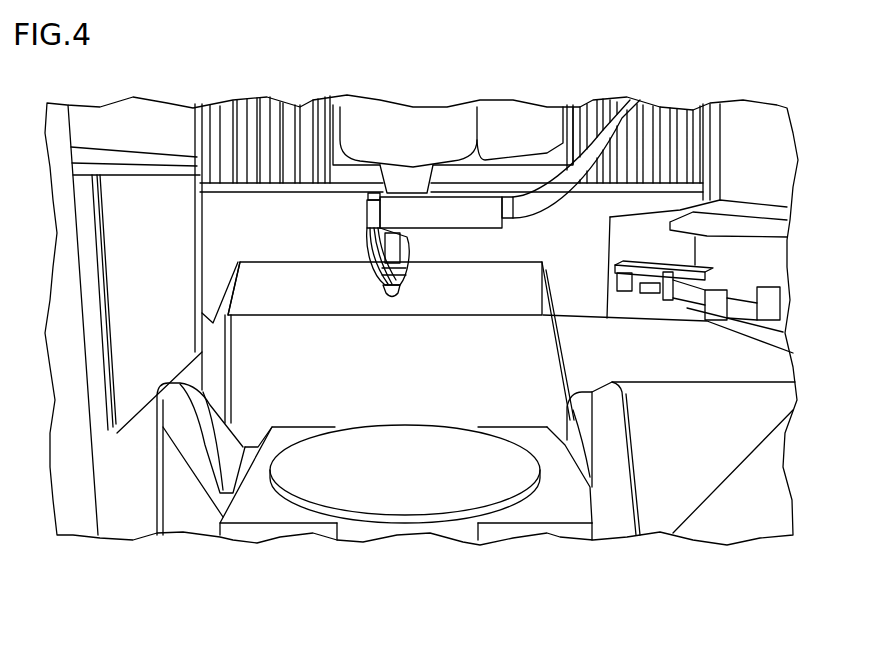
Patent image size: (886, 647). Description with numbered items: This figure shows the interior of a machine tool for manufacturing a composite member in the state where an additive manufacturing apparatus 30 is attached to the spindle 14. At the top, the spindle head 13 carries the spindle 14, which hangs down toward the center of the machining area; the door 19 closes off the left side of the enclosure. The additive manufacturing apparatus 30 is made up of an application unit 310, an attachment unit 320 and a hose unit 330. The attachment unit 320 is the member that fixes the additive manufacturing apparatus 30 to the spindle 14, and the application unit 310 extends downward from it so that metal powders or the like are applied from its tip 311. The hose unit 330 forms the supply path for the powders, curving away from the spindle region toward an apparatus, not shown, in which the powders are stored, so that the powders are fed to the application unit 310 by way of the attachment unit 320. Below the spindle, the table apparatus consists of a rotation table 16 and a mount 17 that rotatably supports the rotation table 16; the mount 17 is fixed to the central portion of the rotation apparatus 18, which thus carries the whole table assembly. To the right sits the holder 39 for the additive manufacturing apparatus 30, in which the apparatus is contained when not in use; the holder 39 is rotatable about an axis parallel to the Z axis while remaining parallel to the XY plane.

The spindle head 13 is at (414, 127).
The spindle 14 is at (484, 207).
The rotation table 16 is at (395, 500).
The mount 17 is at (260, 510).
The rotation apparatus 18 is at (188, 500).
The door 19 is at (149, 212).
The additive manufacturing apparatus 30 is at (345, 208).
The holder 39 is at (783, 333).
The application unit 310 is at (363, 247).
The tip 311 is at (368, 295).
The attachment unit 320 is at (442, 183).
The hose unit 330 is at (603, 132).